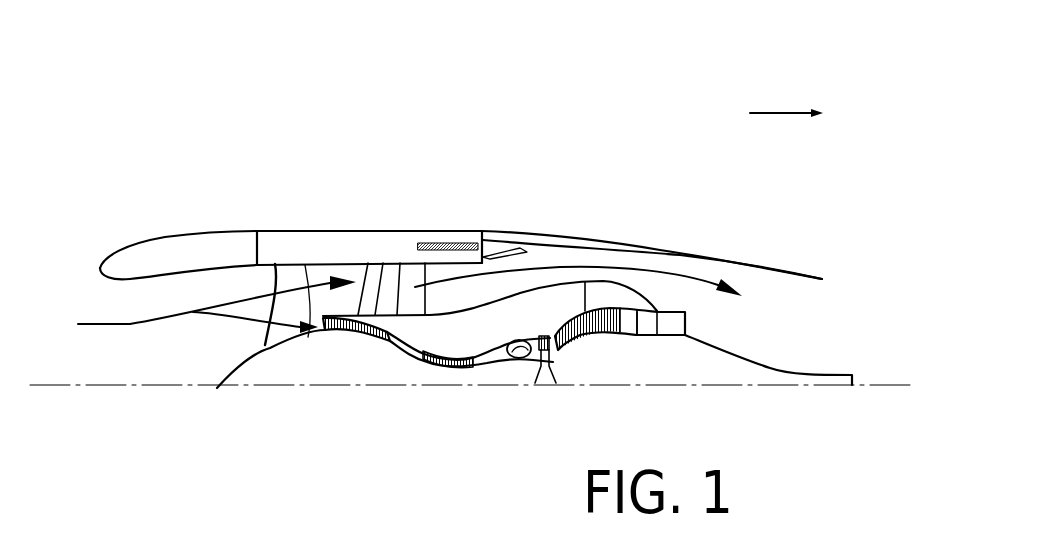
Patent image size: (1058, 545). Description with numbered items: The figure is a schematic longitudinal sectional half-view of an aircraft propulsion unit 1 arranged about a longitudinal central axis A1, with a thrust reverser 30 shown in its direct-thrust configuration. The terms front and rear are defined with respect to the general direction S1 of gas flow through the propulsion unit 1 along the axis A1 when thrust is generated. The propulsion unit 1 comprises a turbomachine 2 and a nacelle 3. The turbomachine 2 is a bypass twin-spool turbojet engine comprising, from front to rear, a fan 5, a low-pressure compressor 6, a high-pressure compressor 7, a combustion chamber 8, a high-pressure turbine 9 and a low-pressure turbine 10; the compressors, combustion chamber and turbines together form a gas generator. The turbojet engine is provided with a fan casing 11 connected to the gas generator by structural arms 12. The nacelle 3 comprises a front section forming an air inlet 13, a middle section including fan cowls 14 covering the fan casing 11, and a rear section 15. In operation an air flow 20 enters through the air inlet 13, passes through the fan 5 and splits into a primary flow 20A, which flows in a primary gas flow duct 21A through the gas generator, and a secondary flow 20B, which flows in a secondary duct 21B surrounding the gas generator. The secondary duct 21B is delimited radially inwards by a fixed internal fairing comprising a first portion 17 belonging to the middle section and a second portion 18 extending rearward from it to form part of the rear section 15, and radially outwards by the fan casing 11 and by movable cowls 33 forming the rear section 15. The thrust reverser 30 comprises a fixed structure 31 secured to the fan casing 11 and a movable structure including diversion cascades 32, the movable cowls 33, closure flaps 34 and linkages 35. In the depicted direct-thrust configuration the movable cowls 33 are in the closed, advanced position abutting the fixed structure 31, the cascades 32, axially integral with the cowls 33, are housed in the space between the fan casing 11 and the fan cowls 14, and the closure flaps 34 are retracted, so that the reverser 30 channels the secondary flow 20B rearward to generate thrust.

The propulsion unit 1 is at (99, 155).
The turbomachine 2 is at (801, 335).
The nacelle 3 is at (553, 67).
The fan 5 is at (263, 340).
The low-pressure compressor 6 is at (357, 343).
The high-pressure compressor 7 is at (440, 375).
The combustion chamber 8 is at (519, 380).
The high-pressure turbine 9 is at (577, 348).
The low-pressure turbine 10 is at (626, 349).
The fan casing 11 is at (320, 265).
The structural arms 12 is at (410, 278).
The air inlet 13 is at (163, 236).
The fan cowls 14 is at (358, 231).
The rear section 15 is at (649, 170).
The movable cowls 33 is at (649, 170).
The first portion 17 is at (328, 316).
The second portion 18 is at (650, 298).
The air flow 20 is at (130, 323).
The primary flow 20A is at (240, 315).
The secondary flow 20B is at (275, 264).
The primary gas flow duct 21A is at (498, 350).
The secondary duct 21B is at (603, 258).
The thrust reverser 30 is at (475, 189).
The fixed structure 31 is at (485, 256).
The diversion cascades 32 is at (432, 243).
The closure flaps 34 is at (535, 254).
The linkages 35 is at (517, 358).
The longitudinal central axis A1 is at (52, 386).
The general direction of gas flow S1 is at (785, 108).